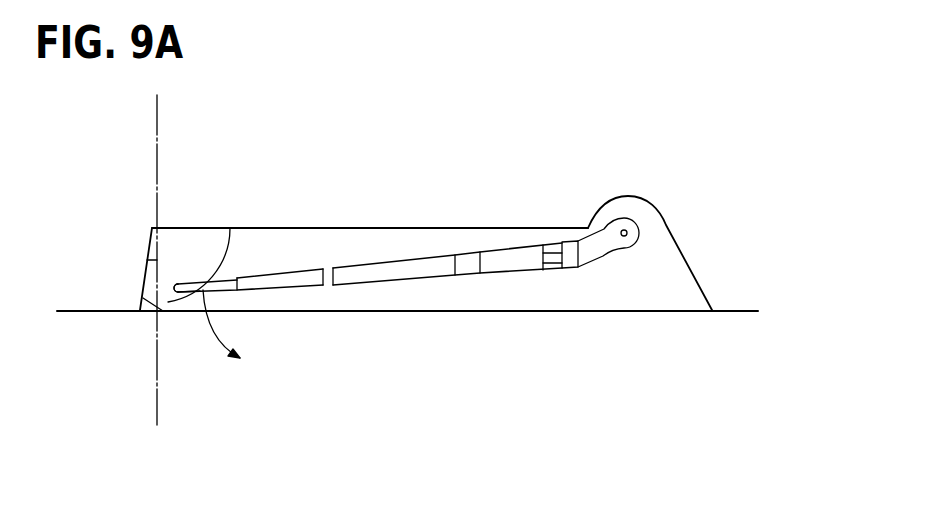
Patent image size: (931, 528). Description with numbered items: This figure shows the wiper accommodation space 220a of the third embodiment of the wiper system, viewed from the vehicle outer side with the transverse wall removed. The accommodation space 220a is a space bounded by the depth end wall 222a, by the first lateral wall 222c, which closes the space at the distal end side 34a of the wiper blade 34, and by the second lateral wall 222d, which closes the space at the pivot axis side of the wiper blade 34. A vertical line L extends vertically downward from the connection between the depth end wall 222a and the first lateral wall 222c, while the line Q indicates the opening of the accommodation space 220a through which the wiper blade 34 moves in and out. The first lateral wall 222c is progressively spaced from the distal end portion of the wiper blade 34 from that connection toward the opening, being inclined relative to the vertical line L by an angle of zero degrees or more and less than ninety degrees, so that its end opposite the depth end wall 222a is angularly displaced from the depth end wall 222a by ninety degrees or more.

The wiper blade 34 is at (390, 252).
The distal end side of the wiper blade 34a is at (225, 290).
The wiper accommodation space 220a is at (298, 228).
The depth end wall 222a is at (192, 228).
The first lateral wall 222c is at (163, 312).
The second lateral wall 222d is at (692, 265).
The line indicating the opening of the accommodation space Q is at (72, 313).
The vertical line L is at (160, 407).